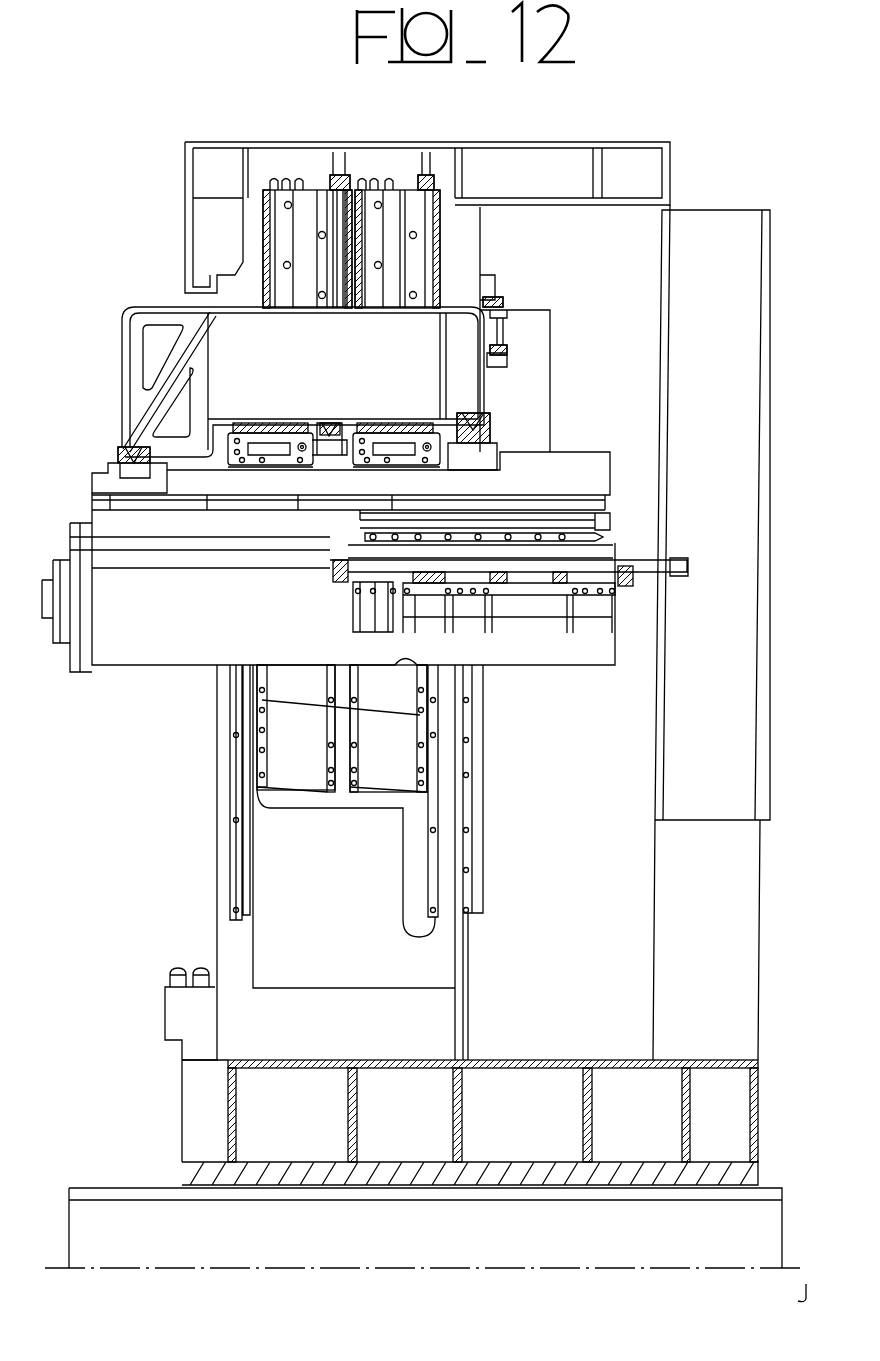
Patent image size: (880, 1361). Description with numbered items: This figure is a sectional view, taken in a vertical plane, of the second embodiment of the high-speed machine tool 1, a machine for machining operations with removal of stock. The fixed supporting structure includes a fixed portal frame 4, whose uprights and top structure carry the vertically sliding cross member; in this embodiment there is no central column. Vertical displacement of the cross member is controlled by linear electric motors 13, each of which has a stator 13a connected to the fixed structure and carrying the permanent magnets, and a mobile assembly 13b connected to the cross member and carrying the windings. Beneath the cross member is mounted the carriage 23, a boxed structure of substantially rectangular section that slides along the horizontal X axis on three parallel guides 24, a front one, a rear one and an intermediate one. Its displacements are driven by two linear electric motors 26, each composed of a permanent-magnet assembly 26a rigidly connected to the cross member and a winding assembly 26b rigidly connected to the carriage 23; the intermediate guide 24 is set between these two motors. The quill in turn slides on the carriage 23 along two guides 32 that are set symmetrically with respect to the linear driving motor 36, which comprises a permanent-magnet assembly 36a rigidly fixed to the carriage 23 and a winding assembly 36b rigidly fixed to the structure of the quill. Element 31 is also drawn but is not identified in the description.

The high-speed machine tool 1 is at (777, 668).
The fixed portal frame 4 is at (698, 190).
The linear electric motor 13 is at (465, 240).
The stator 13a is at (377, 763).
The mobile assembly 13b is at (367, 220).
The carriage 23 is at (597, 470).
The guide 24 is at (127, 450).
The linear electric motor 26 is at (247, 405).
The permanent-magnet assembly 26a is at (267, 423).
The winding assembly 26b is at (277, 452).
The bracket 31 is at (377, 565).
The guide 32 is at (675, 567).
The linear driving motor 36 is at (613, 528).
The permanent-magnet assembly 36a is at (145, 507).
The winding assembly 36b is at (373, 520).